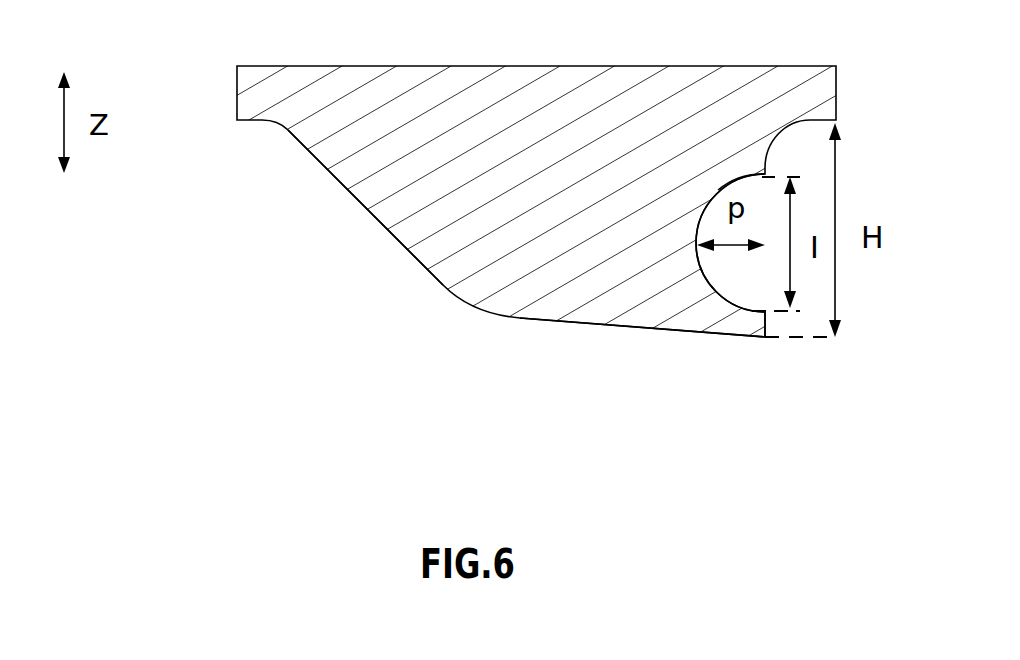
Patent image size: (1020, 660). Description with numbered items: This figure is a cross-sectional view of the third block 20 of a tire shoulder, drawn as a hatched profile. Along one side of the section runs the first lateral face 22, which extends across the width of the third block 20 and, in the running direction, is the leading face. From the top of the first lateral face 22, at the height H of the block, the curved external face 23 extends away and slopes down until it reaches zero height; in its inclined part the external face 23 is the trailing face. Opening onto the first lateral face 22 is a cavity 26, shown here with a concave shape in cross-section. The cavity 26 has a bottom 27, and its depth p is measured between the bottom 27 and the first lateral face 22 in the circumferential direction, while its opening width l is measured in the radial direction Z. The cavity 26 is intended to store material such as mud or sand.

The third block 20 is at (180, 307).
The first lateral face 22 is at (775, 337).
The external face 23 is at (442, 288).
The cavity 26 is at (765, 296).
The bottom 27 is at (743, 177).